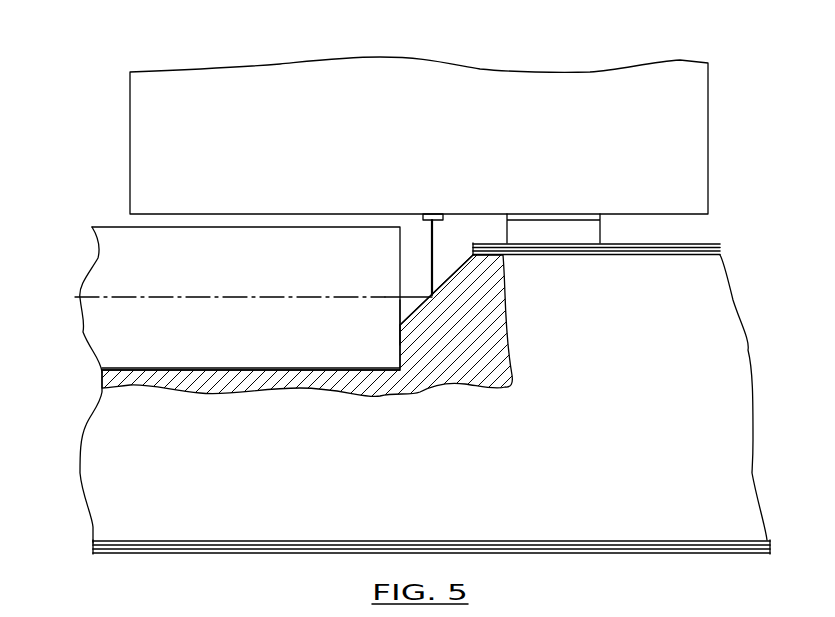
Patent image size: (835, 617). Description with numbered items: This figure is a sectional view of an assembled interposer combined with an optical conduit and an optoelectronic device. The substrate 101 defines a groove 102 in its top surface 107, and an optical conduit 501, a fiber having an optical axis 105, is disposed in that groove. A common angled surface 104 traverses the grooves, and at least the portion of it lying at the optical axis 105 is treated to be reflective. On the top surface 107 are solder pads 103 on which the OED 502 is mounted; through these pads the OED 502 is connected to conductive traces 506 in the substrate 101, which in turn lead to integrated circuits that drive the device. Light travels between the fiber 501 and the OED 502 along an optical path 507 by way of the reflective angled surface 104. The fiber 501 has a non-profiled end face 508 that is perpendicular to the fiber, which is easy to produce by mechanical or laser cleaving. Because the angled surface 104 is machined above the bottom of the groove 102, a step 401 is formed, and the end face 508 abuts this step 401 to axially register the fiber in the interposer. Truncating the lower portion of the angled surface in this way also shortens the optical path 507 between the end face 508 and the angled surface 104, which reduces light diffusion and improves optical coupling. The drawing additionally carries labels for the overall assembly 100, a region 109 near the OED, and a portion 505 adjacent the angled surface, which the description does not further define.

The semiconductor device 100 is at (742, 247).
The substrate 101 is at (93, 457).
The groove 102 is at (102, 337).
The solder pads 103 is at (600, 232).
The angled surface 104 is at (455, 275).
The optical axis 105 is at (197, 297).
The top surface 107 is at (712, 257).
The electronic component 109 is at (463, 178).
The step 401 is at (400, 350).
The optical conduit 501 is at (107, 277).
The OED 502 is at (422, 87).
The resin fillet 505 is at (410, 192).
The conductive traces 506 is at (703, 243).
The optical path 507 is at (430, 243).
The non-profiled end face 508 is at (402, 323).